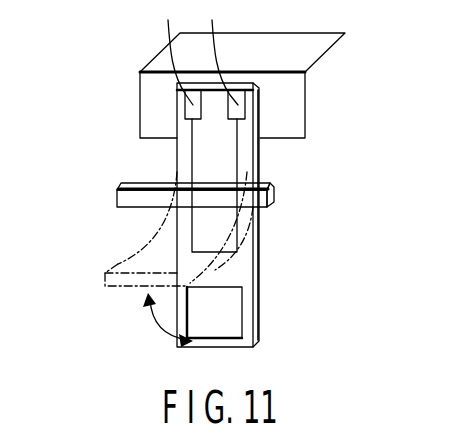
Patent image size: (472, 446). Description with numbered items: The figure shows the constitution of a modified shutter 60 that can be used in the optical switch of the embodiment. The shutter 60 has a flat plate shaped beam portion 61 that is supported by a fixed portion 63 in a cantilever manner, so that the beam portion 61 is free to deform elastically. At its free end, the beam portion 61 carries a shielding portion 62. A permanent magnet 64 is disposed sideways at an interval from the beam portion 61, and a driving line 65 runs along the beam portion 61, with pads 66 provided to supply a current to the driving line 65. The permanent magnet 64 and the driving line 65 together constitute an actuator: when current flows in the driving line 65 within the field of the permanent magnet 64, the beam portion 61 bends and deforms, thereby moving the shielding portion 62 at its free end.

The shutter 60 is at (105, 95).
The beam portion 61 is at (250, 285).
The shielding portion 62 is at (223, 317).
The fixed portion 63 is at (278, 113).
The permanent magnet 64 is at (272, 193).
The driving line 65 is at (255, 257).
The pads 66 is at (240, 100).